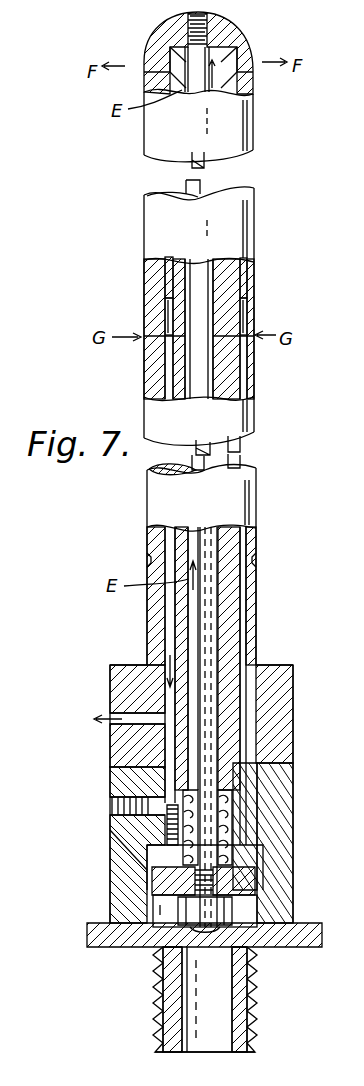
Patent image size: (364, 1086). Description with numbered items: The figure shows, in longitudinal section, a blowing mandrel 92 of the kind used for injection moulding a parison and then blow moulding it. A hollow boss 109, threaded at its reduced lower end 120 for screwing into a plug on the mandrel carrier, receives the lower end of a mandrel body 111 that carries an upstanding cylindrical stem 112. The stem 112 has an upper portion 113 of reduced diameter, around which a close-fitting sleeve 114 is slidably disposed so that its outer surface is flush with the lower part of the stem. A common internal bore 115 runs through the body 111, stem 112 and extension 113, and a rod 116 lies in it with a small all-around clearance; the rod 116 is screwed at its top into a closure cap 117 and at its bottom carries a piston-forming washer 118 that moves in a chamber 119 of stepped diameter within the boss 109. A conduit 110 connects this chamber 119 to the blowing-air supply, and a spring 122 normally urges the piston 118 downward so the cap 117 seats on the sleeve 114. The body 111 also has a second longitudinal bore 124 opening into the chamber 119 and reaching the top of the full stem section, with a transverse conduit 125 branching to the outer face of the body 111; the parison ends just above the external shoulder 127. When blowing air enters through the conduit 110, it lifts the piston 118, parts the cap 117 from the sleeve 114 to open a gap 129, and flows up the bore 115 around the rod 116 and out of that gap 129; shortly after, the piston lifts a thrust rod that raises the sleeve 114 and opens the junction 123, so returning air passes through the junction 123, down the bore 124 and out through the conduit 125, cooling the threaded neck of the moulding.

The mandrel 92 is at (269, 412).
The hollow boss 109 is at (280, 857).
The conduit 110 is at (198, 981).
The mandrel body 111 is at (273, 718).
The cylindrical stem 112 is at (251, 536).
The upper portion of reduced diameter 113 is at (226, 272).
The sleeve 114 is at (245, 78).
The internal bore 115 is at (216, 582).
The rod 116 is at (208, 620).
The closure cap 117 is at (226, 20).
The piston-forming washer 118 is at (160, 884).
The chamber 119 is at (246, 913).
The reduced lower end 120 is at (254, 1043).
The spring 122 is at (223, 820).
The junction 123 is at (240, 328).
The second longitudinal bore 124 is at (168, 607).
The transverse conduit 125 is at (133, 712).
The external shoulder 127 is at (272, 665).
The gap 129 is at (246, 57).